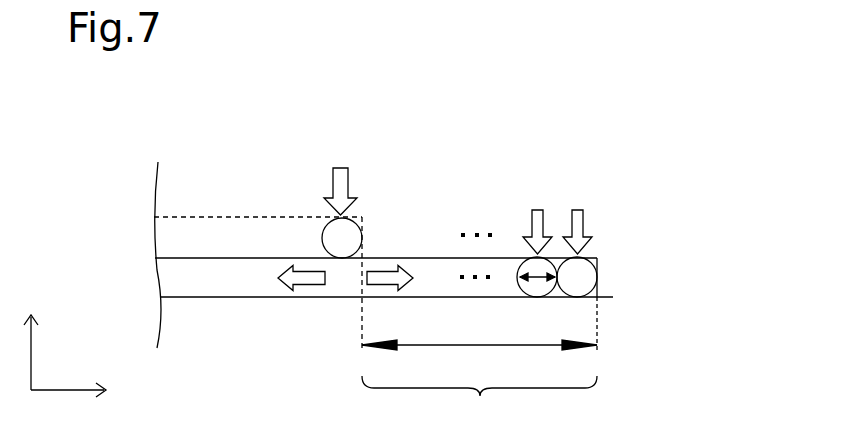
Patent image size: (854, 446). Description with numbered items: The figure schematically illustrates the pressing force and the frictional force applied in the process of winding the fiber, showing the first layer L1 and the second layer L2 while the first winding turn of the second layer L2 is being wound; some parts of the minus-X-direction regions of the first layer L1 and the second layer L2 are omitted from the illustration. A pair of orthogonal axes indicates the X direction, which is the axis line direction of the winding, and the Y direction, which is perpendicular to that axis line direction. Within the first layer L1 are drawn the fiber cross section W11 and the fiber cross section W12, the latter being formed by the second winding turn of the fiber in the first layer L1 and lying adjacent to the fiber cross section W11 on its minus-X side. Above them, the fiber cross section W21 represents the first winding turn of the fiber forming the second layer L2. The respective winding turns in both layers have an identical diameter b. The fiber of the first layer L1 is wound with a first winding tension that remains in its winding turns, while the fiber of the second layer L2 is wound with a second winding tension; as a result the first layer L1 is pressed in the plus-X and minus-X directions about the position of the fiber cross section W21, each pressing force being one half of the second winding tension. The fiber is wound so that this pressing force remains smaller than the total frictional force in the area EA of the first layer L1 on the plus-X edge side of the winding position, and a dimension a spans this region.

The first layer L1 is at (620, 284).
The second layer L2 is at (218, 217).
The fiber cross section W21 is at (335, 233).
The fiber cross section W12 is at (533, 265).
The fiber cross section W11 is at (585, 272).
The distance a is at (479, 334).
The diameter b is at (535, 280).
The area EA is at (479, 400).
The X direction X is at (78, 391).
The Y-axis direction Y is at (30, 339).